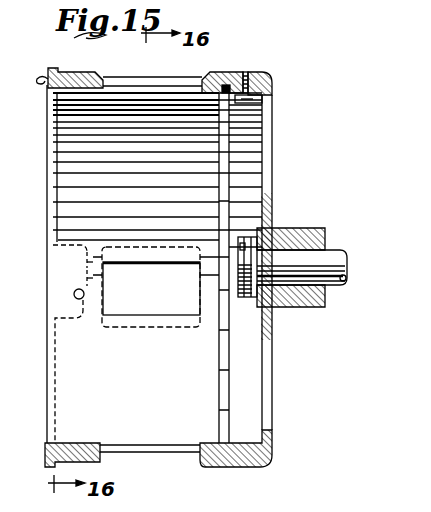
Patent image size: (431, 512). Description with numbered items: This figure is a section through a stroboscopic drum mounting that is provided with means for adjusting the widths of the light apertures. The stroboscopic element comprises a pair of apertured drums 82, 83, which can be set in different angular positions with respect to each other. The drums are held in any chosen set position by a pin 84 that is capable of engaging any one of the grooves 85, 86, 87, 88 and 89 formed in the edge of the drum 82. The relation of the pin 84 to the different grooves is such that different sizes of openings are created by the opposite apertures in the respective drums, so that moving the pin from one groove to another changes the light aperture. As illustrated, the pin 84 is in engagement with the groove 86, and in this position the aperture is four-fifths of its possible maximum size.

The apertured drum 82 is at (221, 88).
The apertured drum 83 is at (47, 102).
The pin 84 is at (74, 295).
The groove 85 is at (80, 308).
The groove 86 is at (84, 296).
The groove 87 is at (84, 279).
The groove 88 is at (84, 264).
The groove 89 is at (80, 252).